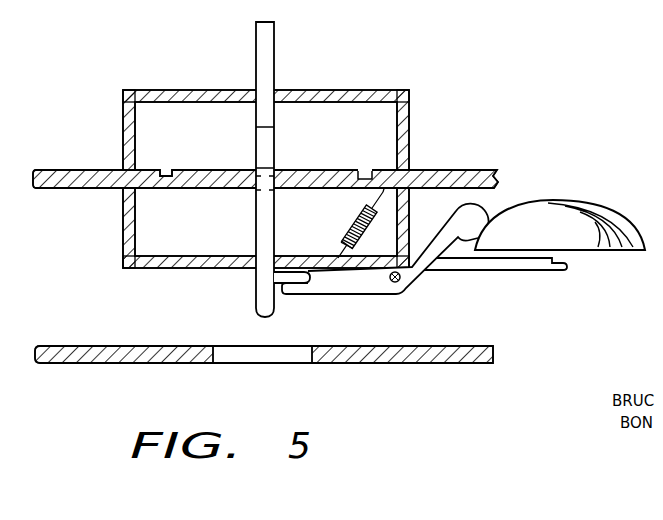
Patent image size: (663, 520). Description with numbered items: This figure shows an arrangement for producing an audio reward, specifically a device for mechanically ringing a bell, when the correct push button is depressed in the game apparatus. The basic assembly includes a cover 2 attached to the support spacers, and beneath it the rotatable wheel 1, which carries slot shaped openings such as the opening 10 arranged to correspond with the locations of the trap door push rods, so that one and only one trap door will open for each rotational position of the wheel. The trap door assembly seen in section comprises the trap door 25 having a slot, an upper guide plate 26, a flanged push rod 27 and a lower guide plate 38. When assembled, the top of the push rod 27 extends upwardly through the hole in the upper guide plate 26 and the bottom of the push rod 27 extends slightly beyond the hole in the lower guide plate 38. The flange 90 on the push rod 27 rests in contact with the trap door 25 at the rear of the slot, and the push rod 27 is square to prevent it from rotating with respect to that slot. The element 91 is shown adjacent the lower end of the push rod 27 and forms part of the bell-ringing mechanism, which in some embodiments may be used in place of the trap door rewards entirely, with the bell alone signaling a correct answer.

The rotatable wheel 1 is at (440, 352).
The cover 2 is at (62, 178).
The slot shaped opening 10 is at (264, 358).
The trap door 25 is at (318, 170).
The upper guide plate 26 is at (271, 179).
The flanged push rod 27 is at (291, 173).
The lower guide plate 38 is at (197, 270).
The flange 90 is at (268, 140).
The latch pin 91 is at (292, 284).